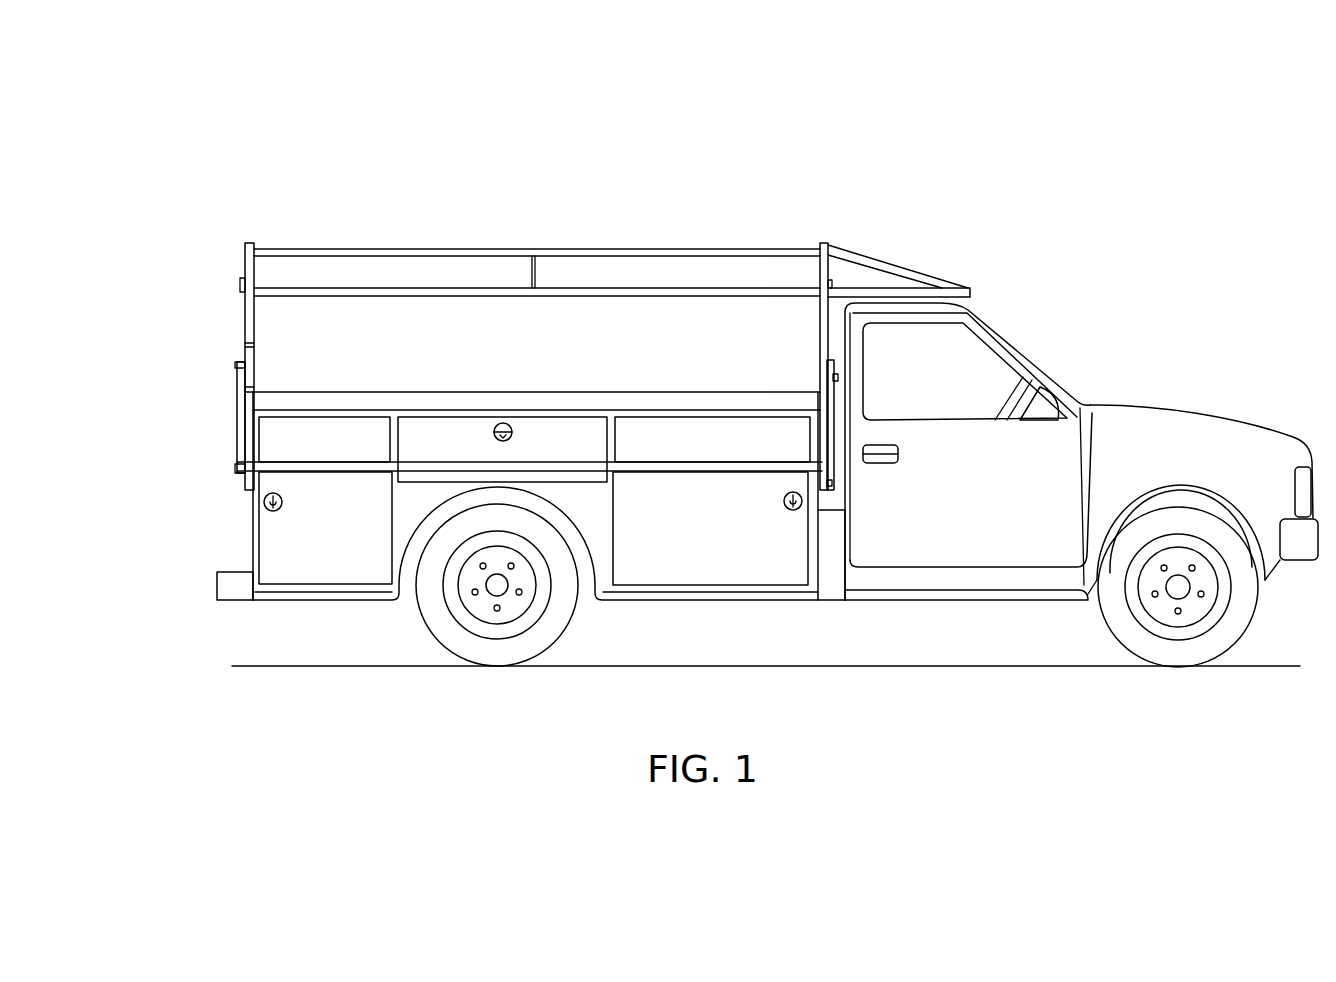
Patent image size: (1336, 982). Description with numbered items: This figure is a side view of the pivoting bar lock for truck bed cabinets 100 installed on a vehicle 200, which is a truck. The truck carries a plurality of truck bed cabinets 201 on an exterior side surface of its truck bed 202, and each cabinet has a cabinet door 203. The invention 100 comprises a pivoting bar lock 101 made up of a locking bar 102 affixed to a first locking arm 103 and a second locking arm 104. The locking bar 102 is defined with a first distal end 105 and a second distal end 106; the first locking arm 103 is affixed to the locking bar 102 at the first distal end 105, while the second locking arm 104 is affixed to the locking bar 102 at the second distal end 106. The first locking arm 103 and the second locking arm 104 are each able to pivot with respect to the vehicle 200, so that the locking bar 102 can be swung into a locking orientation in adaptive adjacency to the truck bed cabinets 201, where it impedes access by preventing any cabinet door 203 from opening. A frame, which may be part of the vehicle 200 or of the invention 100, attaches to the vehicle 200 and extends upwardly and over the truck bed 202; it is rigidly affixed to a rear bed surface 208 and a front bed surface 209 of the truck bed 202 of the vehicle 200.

The pivoting bar lock for truck bed cabinets 100 is at (300, 176).
The pivoting bar lock 101 is at (205, 318).
The locking bar 102 is at (448, 462).
The first locking arm 103 is at (238, 373).
The second locking arm 104 is at (833, 378).
The first distal end 105 is at (243, 472).
The second distal end 106 is at (827, 464).
The vehicle 200 is at (1176, 408).
The truck bed cabinets 201 is at (342, 583).
The truck bed 202 is at (842, 703).
The cabinet door 203 is at (637, 437).
The rear bed surface 208 is at (253, 552).
The front bed surface 209 is at (820, 537).